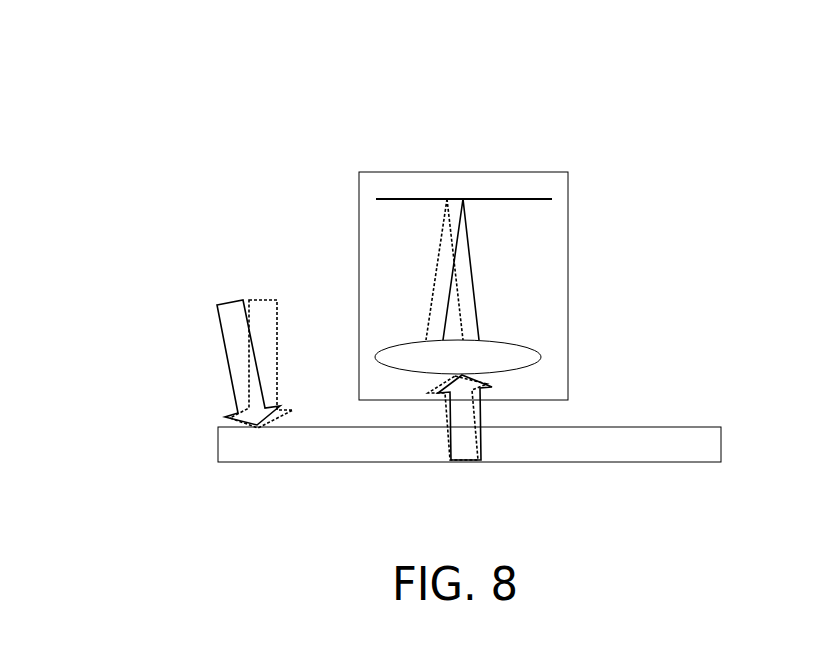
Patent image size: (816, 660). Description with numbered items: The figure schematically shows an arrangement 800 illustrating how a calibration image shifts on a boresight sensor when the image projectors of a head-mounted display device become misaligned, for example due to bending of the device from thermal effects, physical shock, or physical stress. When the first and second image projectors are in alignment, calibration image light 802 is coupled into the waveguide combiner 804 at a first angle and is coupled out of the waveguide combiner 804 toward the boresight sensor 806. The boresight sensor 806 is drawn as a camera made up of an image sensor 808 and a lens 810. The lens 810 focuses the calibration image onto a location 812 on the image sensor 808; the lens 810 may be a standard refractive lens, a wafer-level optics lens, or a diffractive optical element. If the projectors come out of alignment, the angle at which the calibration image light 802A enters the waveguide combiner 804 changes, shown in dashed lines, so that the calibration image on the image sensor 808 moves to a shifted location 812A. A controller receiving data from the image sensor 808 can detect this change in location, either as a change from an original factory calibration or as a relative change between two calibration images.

The optical system 800 is at (124, 36).
The calibration image light 802 is at (220, 318).
The calibration image light 802A is at (275, 299).
The waveguide combiner 804 is at (585, 462).
The boresight sensor 806 is at (505, 172).
The image sensor 808 is at (533, 200).
The lens 810 is at (543, 357).
The location 812 is at (463, 190).
The shifted location 812A is at (431, 207).